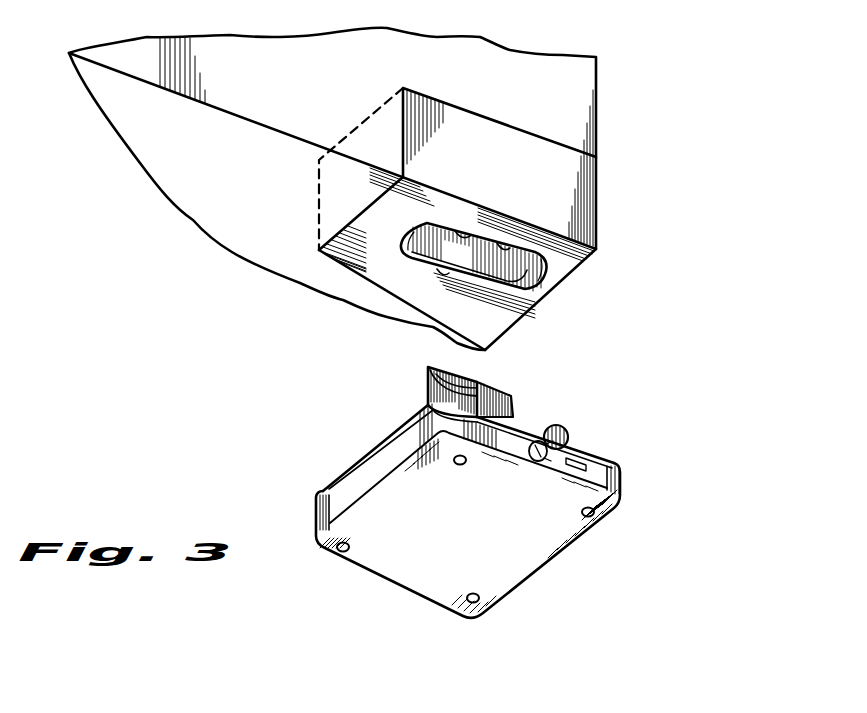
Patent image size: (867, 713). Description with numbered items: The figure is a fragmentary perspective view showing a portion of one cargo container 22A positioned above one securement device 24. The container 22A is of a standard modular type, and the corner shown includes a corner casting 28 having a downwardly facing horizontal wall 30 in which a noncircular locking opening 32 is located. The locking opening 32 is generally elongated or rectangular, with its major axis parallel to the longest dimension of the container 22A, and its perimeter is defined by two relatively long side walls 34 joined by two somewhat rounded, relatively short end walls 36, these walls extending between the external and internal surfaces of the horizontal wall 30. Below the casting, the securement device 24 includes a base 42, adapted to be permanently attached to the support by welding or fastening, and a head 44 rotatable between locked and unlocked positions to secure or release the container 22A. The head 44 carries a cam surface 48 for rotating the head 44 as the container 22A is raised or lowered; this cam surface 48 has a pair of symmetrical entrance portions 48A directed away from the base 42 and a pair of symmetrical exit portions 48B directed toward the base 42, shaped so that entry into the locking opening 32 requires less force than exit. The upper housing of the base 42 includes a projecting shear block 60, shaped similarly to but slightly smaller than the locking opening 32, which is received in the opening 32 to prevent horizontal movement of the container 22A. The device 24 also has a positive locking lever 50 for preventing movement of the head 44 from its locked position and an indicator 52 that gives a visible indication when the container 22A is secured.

The container 22A is at (597, 102).
The securement device 24 is at (318, 528).
The corner casting 28 is at (572, 172).
The horizontal wall 30 is at (340, 263).
The locking opening 32 is at (472, 228).
The side walls 34 is at (505, 245).
The end walls 36 is at (425, 225).
The base 42 is at (519, 543).
The head 44 is at (497, 391).
The cam surface 48 is at (428, 367).
The entrance portions 48A is at (478, 380).
The exit portions 48B is at (428, 405).
The positive locking lever 50 is at (627, 483).
The indicator 52 is at (570, 437).
The shear block 60 is at (400, 427).